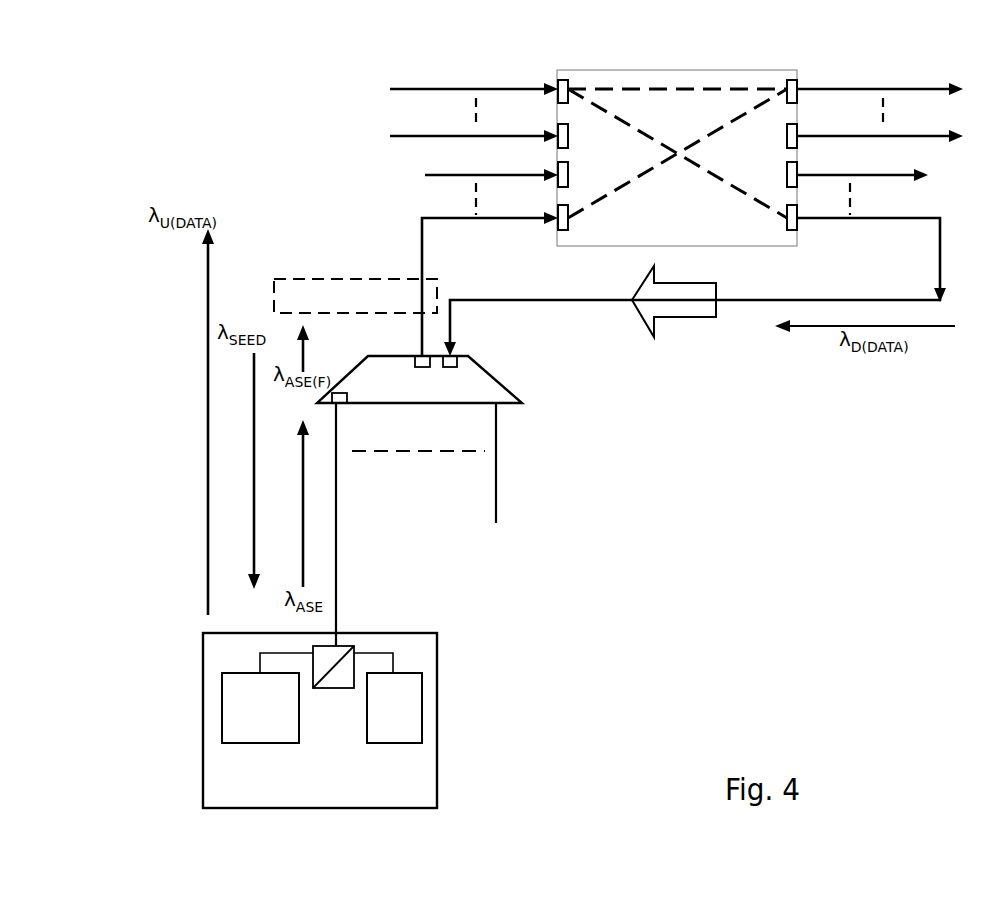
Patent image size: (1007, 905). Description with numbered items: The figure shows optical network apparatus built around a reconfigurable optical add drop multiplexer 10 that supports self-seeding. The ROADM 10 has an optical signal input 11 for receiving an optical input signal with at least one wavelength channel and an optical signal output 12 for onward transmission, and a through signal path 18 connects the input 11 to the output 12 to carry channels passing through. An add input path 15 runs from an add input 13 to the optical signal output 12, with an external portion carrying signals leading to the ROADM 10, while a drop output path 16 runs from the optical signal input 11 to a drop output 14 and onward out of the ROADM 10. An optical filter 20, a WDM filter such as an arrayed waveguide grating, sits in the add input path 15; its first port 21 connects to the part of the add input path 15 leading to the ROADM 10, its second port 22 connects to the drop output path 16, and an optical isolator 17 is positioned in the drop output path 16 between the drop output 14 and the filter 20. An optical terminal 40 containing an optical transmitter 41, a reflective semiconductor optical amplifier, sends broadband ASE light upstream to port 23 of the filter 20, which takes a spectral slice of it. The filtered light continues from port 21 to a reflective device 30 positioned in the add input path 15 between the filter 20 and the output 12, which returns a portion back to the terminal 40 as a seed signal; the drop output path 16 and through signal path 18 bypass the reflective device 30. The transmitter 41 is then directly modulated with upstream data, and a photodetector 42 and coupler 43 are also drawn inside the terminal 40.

The reconfigurable optical add drop multiplexer 10 is at (647, 72).
The optical signal input 11 is at (558, 84).
The optical signal output 12 is at (798, 80).
The add input 13 is at (557, 232).
The drop output 14 is at (798, 231).
The add input path 15 is at (421, 244).
The drop output path 16 is at (758, 208).
The optical isolator 17 is at (672, 318).
The through signal path 18 is at (712, 88).
The optical filter 20 is at (514, 392).
The first port 21 is at (415, 356).
The second port 22 is at (458, 356).
The port 23 is at (346, 403).
The reflective device 30 is at (317, 279).
The optical terminal 40 is at (203, 667).
The optical transmitter 41 is at (222, 720).
The photodetector PD 42 is at (422, 710).
The optical coupler 43 is at (338, 652).